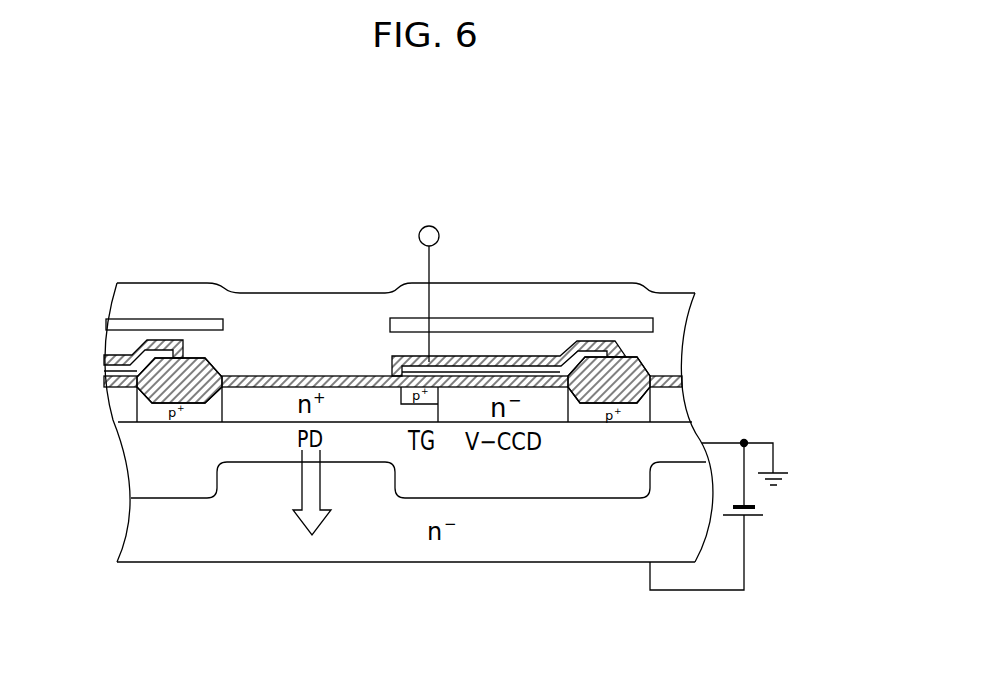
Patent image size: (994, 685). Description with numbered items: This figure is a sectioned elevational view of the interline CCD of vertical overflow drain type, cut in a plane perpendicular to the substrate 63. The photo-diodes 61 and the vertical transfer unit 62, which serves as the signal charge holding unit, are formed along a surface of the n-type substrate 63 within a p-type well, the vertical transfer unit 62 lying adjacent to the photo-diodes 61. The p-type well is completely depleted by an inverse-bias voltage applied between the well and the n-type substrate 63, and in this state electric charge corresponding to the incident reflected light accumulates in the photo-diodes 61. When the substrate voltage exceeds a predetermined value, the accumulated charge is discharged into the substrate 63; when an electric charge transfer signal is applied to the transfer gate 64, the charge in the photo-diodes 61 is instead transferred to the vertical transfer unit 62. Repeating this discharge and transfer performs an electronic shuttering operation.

The photo-diode 61 is at (253, 443).
The vertical transfer unit 62 is at (545, 478).
The substrate 63 is at (403, 538).
The transfer gate 64 is at (417, 413).